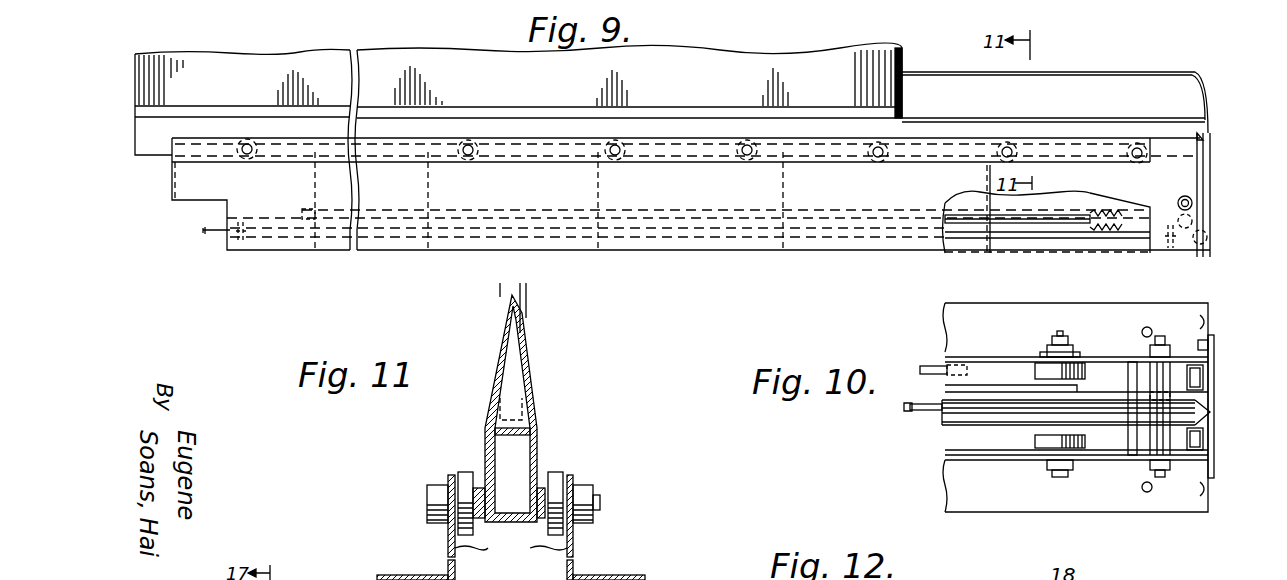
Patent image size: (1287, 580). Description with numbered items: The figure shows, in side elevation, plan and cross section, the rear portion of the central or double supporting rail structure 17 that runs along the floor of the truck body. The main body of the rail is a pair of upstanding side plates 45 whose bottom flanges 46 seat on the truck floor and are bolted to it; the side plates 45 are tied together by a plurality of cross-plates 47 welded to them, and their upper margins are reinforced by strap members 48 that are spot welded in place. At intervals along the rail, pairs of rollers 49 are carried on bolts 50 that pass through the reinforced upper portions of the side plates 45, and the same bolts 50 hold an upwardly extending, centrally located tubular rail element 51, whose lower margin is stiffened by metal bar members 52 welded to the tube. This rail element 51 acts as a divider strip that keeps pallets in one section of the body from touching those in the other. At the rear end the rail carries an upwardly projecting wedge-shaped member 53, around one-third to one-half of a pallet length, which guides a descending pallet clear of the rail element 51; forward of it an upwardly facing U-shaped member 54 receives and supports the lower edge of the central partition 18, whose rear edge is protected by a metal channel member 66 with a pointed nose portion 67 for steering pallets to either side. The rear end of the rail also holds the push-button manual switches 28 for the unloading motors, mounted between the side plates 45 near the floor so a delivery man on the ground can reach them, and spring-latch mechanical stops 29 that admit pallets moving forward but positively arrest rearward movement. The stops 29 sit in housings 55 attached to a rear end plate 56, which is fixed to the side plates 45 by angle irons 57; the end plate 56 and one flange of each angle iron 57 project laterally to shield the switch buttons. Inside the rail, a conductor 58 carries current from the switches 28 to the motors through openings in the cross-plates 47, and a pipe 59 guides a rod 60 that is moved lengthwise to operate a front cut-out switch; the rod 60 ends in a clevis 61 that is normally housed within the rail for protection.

In FIG. 9, the central rail structure 17 is at (760, 252).
In FIG. 9, the central partition 18 is at (480, 65).
In FIG. 11, the central partition 18 is at (527, 293).
In FIG. 9, the manual switches 28 is at (1194, 203).
In FIG. 10, the manual switches 28 is at (1160, 340).
In FIG. 9, the mechanical stops 29 is at (1208, 135).
In FIG. 10, the mechanical stops 29 is at (1203, 368).
In FIG. 9, the side plates 45 is at (678, 250).
In FIG. 11, the side plates 45 is at (511, 550).
In FIG. 10, the side plates 45 is at (995, 365).
In FIG. 9, the bottom flanges 46 is at (712, 252).
In FIG. 11, the bottom flanges 46 is at (405, 575).
In FIG. 10, the bottom flanges 46 is at (948, 316).
In FIG. 9, the cross-plates 47 is at (432, 190).
In FIG. 10, the cross-plates 47 is at (1128, 443).
In FIG. 9, the strap members 48 is at (805, 165).
In FIG. 11, the strap members 48 is at (448, 478).
In FIG. 10, the strap members 48 is at (958, 357).
In FIG. 9, the rollers 49 is at (750, 138).
In FIG. 11, the rollers 49 is at (466, 472).
In FIG. 10, the rollers 49 is at (1085, 378).
In FIG. 9, the bolts 50 is at (878, 163).
In FIG. 11, the bolts 50 is at (600, 502).
In FIG. 10, the bolts 50 is at (1055, 477).
In FIG. 9, the tubular rail element 51 is at (838, 127).
In FIG. 11, the tubular rail element 51 is at (540, 438).
In FIG. 9, the metal bar members 52 is at (660, 162).
In FIG. 11, the metal bar members 52 is at (537, 495).
In FIG. 9, the wedge-shaped member 53 is at (1135, 80).
In FIG. 11, the wedge-shaped member 53 is at (528, 332).
In FIG. 10, the wedge-shaped member 53 is at (1205, 412).
In FIG. 9, the U-shaped member 54 is at (702, 108).
In FIG. 11, the U-shaped member 54 is at (537, 400).
In FIG. 10, the housings 55 is at (1214, 388).
In FIG. 9, the rear end plate 56 is at (1212, 163).
In FIG. 10, the rear end plate 56 is at (1208, 345).
In FIG. 10, the angle irons 57 is at (1208, 320).
In FIG. 9, the conductor 58 is at (960, 213).
In FIG. 10, the conductor 58 is at (945, 374).
In FIG. 9, the pipe or conduit 59 is at (968, 240).
In FIG. 10, the pipe or conduit 59 is at (930, 418).
In FIG. 9, the rod 60 is at (212, 238).
In FIG. 10, the rod 60 is at (908, 410).
In FIG. 9, the clevis end element 61 is at (1196, 252).
In FIG. 9, the metal channel member 66 is at (876, 60).
In FIG. 9, the pointed nose portion 67 is at (900, 62).